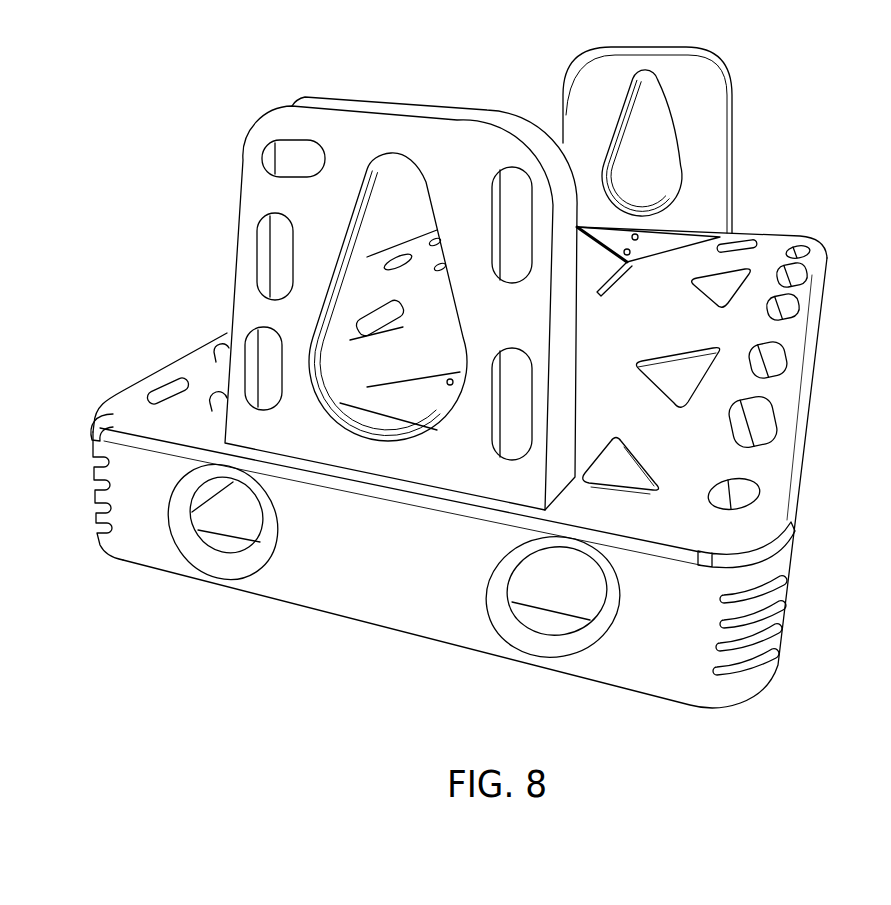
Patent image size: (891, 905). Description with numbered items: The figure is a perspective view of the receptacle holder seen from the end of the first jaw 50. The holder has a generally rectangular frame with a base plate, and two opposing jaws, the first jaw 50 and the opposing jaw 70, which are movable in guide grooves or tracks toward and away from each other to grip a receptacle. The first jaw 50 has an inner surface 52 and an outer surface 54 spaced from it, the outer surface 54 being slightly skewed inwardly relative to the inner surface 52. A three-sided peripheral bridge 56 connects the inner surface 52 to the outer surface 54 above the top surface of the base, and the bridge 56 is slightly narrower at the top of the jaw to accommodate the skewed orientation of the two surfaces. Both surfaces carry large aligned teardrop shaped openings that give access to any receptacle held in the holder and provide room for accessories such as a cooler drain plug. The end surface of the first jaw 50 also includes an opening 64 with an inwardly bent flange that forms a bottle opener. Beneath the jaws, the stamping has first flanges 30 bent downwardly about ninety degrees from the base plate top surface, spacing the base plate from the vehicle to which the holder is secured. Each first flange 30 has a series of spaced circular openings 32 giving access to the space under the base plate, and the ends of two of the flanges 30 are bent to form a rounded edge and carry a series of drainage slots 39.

The first flanges 30 is at (373, 425).
The circular openings 32 is at (533, 615).
The drainage slots 39 is at (773, 653).
The first jaw 50 is at (401, 283).
The inner surface 52 is at (311, 379).
The outer surface 54 is at (476, 172).
The three-sided peripheral bridge 56 is at (620, 114).
The opening 64 is at (324, 150).
The jaw 70 is at (661, 140).